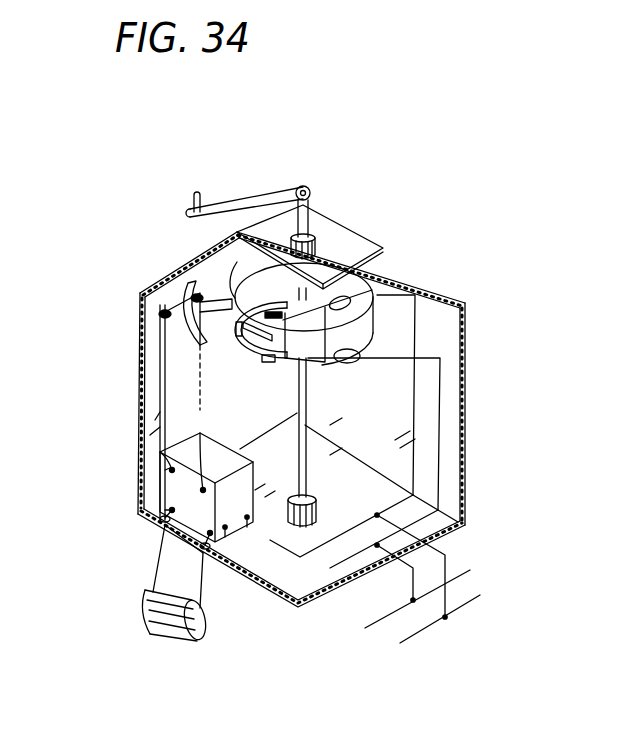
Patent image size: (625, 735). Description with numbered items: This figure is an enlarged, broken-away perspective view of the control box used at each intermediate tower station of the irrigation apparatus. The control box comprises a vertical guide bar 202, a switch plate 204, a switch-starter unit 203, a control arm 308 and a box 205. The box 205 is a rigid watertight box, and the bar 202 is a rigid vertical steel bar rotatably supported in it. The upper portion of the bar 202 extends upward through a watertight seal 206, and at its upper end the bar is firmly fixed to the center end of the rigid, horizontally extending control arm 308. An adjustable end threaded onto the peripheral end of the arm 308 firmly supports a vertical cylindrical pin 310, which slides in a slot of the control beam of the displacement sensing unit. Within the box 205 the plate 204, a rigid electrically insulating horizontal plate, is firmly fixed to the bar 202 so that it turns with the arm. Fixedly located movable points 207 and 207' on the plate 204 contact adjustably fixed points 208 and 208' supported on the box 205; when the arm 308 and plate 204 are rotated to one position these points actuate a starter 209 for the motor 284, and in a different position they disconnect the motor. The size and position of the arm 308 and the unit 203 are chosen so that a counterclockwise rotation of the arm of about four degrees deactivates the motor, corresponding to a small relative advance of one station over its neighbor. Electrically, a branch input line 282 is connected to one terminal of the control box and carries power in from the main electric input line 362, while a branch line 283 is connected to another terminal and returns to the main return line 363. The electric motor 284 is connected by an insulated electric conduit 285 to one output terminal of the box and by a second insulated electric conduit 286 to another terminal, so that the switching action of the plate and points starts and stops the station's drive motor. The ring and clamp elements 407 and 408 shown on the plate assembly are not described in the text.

The vertical guide bar 202 is at (307, 480).
The switch-starter unit 203 is at (112, 266).
The switch plate 204 is at (262, 268).
The box 205 is at (183, 277).
The watertight seal 206 is at (316, 252).
The movable point 207 is at (230, 331).
The movable point 207' is at (225, 276).
The adjustably fixed point 208 is at (152, 406).
The adjustably fixed point 208' is at (155, 285).
The starter 209 is at (183, 484).
The branch input line 282 is at (428, 553).
The branch line 283 is at (412, 575).
The electric motor 284 is at (178, 627).
The insulated electric conduit 285 is at (203, 568).
The insulated electric conduit 286 is at (163, 537).
The control arm 308 is at (282, 196).
The vertical cylindrical pin 310 is at (193, 211).
The main electric input line 362 is at (462, 573).
The main return line 363 is at (455, 605).
The ring 407 is at (283, 340).
The clamp 408 is at (276, 314).